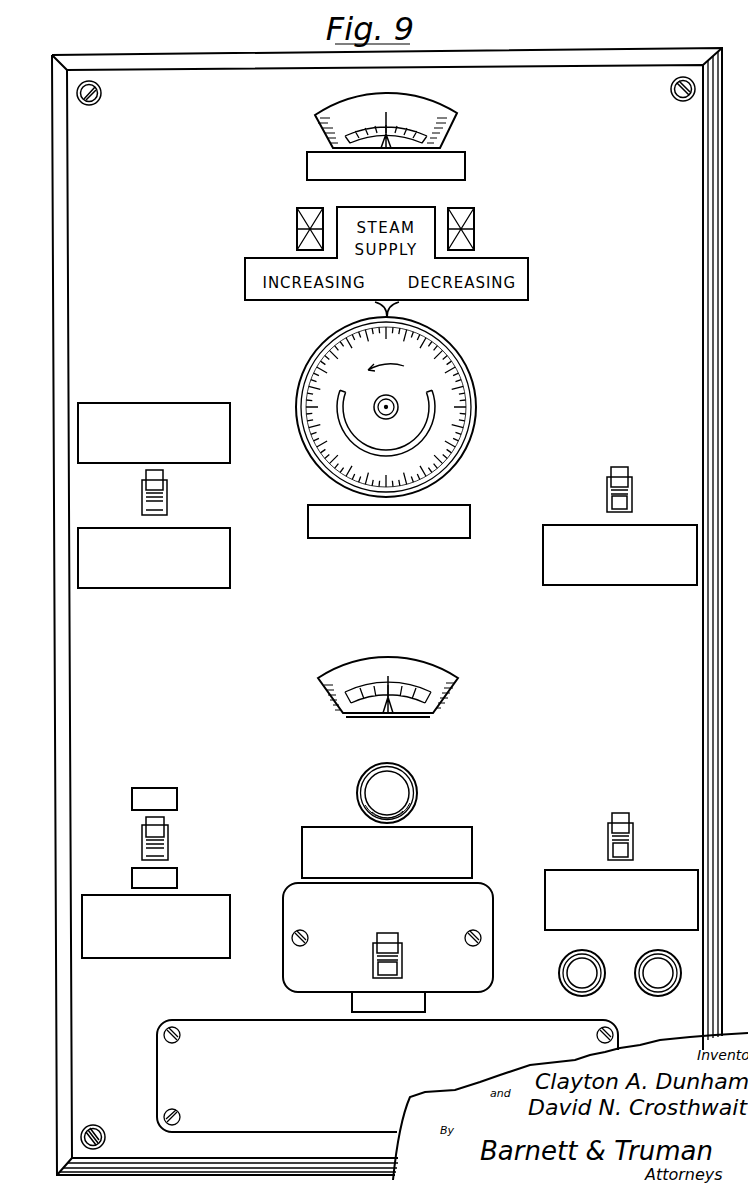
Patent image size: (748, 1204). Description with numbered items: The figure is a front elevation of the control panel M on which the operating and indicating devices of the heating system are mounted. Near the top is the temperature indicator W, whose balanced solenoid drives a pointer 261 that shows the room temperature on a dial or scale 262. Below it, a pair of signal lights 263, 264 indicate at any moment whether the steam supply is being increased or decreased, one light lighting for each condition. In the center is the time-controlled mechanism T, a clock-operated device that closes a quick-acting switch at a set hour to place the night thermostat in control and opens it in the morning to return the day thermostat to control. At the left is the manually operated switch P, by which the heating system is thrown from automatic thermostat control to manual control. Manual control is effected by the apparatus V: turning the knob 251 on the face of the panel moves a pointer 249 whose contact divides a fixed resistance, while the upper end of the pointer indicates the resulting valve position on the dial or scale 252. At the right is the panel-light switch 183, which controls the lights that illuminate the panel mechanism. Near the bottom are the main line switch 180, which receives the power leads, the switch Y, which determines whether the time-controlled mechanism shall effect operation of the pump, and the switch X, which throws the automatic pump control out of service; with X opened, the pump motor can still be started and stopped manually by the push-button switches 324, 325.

The control panel M is at (45, 328).
The temperature indicator W is at (412, 129).
The pointer 261 is at (392, 145).
The dial or scale 262 is at (414, 112).
The signal light 263 is at (297, 229).
The signal light 264 is at (474, 232).
The time-controlled mechanism T is at (490, 378).
The manually operated switch P is at (176, 503).
The panel-light switch 183 is at (643, 504).
The dial or scale 252 is at (370, 692).
The pointer 249 is at (388, 694).
The manual control apparatus V is at (387, 807).
The knob 251 is at (411, 796).
The switch Y is at (186, 861).
The switch X is at (636, 867).
The main line switch 180 is at (366, 971).
The push-button switch 324 is at (560, 968).
The push-button switch 325 is at (656, 986).